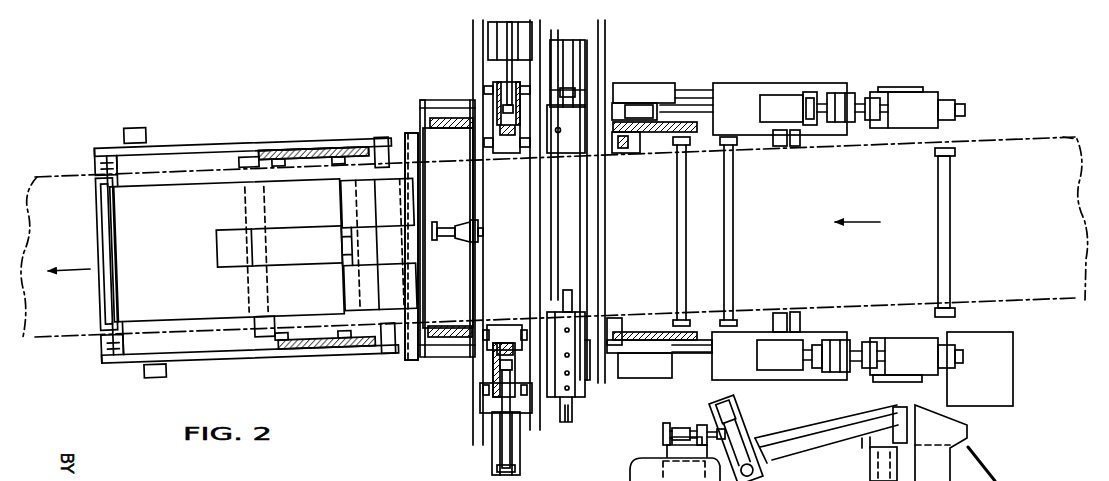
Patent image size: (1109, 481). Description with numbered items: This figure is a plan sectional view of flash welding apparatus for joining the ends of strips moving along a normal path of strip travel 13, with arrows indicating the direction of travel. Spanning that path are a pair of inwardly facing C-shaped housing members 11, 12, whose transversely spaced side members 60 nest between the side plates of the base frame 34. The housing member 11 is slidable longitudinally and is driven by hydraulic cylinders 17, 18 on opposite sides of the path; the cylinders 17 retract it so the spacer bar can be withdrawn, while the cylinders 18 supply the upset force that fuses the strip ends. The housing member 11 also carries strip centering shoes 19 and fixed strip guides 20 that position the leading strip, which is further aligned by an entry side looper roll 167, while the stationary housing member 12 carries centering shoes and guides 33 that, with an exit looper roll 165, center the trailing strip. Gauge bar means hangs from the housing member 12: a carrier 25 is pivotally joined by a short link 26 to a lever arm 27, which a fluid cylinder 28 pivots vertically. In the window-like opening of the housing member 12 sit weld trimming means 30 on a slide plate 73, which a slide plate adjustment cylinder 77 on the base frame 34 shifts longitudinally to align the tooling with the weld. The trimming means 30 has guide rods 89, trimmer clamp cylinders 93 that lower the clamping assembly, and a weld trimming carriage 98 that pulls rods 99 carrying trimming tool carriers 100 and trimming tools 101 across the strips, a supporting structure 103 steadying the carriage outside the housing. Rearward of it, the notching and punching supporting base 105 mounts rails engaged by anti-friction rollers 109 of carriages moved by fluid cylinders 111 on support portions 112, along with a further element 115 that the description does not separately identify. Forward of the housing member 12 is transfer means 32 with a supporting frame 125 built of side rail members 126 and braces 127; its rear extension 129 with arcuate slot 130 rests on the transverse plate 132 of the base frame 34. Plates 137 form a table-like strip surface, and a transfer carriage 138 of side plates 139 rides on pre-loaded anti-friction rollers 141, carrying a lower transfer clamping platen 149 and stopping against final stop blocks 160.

The C-shaped housing member 11 is at (840, 110).
The C-shaped housing member 12 is at (440, 338).
The normal path of strip travel 13 is at (39, 180).
The hydraulic cylinder 17 is at (840, 110).
The hydraulic cylinder 18 is at (918, 92).
The strip centering shoe 19 is at (810, 99).
The fixed strip guide 20 is at (782, 129).
The carrier 25 is at (895, 472).
The short link 26 is at (900, 425).
The lever arm 27 is at (836, 438).
The fluid cylinder 28 is at (662, 434).
The weld trimming means 30 is at (612, 240).
The transfer means 32 is at (266, 128).
The strip centering shoes and fixed strip guides 33 is at (628, 153).
The base frame 34 is at (660, 378).
The side member 60 is at (465, 122).
The slide plate 73 is at (565, 87).
The slide plate adjustment cylinder 77 is at (448, 223).
The guide rod 89 is at (528, 148).
The trimmer clamp cylinder 93 is at (775, 470).
The weld trimming carriage 98 is at (600, 62).
The pull rod 99 is at (566, 256).
The trimming tool carrier 100 is at (565, 395).
The trimming tool 101 is at (578, 390).
The supporting structure 103 is at (607, 36).
The supporting base 105 is at (490, 30).
The anti-friction roller 109 is at (482, 400).
The fluid cylinder 111 is at (507, 76).
The support portion 112 is at (495, 460).
The piston 115 is at (495, 365).
The supporting frame 125 is at (195, 355).
The side rail member 126 is at (180, 145).
The brace 127 is at (382, 140).
The extension 129 is at (416, 255).
The arcuate slot 130 is at (386, 246).
The transverse plate 132 is at (408, 353).
The plate 137 is at (236, 196).
The transfer carriage 138 is at (296, 150).
The side plate 139 is at (322, 352).
The anti-friction roller 141 is at (337, 138).
The lower transfer clamping platen 149 is at (372, 320).
The final stop block 160 is at (110, 146).
The exit looper roll 165 is at (102, 226).
The entry side looper roll 167 is at (950, 250).